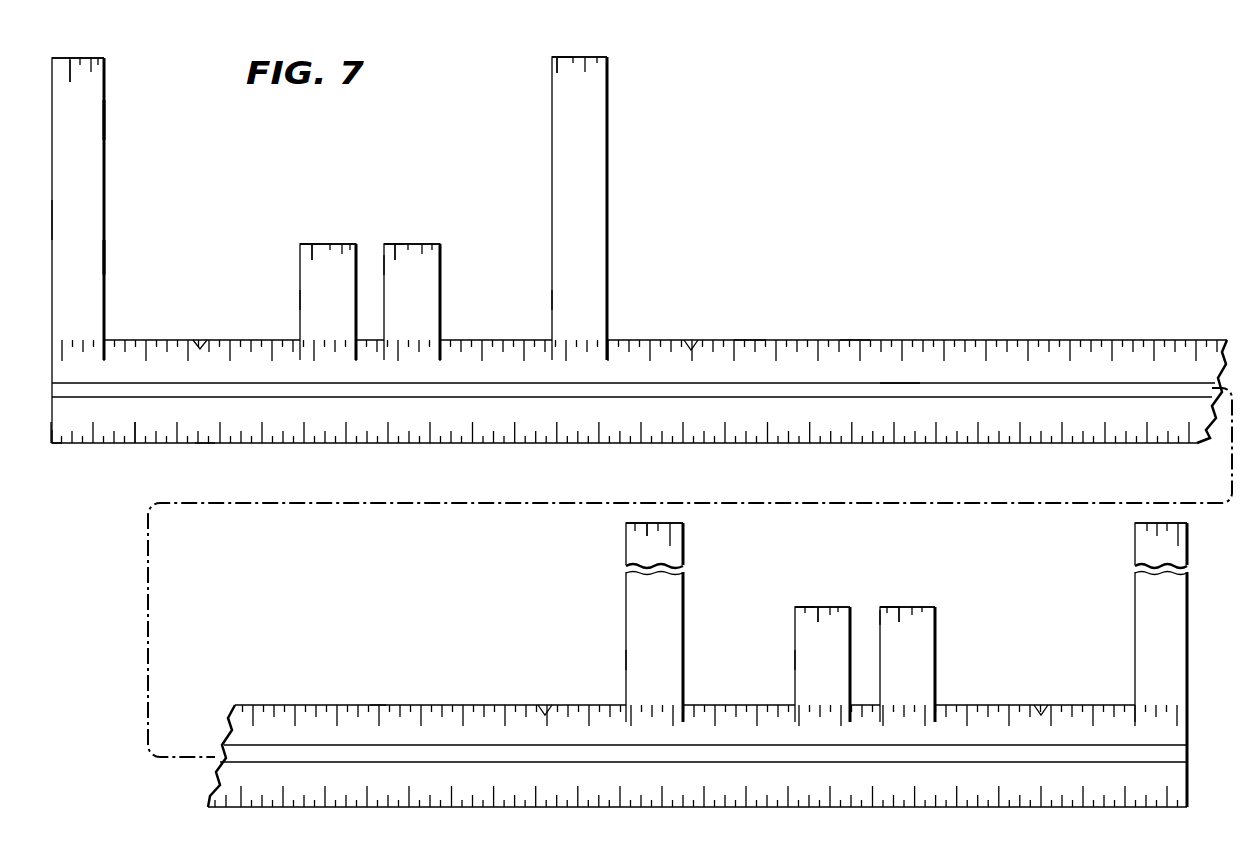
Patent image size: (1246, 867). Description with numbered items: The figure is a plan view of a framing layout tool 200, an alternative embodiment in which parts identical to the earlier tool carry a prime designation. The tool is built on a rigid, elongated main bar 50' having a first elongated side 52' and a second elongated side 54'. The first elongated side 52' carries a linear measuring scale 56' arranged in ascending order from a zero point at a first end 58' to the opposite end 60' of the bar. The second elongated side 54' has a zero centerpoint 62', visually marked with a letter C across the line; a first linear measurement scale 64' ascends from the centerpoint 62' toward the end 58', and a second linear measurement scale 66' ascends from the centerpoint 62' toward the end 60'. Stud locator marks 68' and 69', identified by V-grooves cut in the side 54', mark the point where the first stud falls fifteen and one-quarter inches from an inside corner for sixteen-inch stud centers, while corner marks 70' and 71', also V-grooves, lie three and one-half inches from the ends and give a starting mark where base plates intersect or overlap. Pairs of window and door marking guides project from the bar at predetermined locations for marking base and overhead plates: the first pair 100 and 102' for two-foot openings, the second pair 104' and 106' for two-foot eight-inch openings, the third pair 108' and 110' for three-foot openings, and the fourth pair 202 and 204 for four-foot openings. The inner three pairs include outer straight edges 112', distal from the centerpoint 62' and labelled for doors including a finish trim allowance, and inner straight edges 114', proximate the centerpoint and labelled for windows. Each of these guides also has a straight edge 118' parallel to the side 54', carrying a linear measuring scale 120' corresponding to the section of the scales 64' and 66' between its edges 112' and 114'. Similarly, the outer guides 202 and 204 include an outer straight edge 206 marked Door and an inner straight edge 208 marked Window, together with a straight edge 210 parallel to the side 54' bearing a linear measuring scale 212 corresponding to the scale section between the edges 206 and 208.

The framing layout tool 200 is at (1032, 222).
The opposite end 60' is at (718, 665).
The window and door marking guide 100 is at (620, 137).
The window and door marking guide 102' is at (704, 536).
The window and door marking guide 104' is at (425, 209).
The window and door marking guide 106' is at (827, 578).
The window and door marking guide 108' is at (296, 231).
The window and door marking guide 110' is at (944, 590).
The outer straight edge 112' is at (617, 427).
The inner straight edge 114' is at (620, 436).
The straight edge 118' is at (615, 331).
The linear measuring scale 120' is at (627, 340).
The marking guide 202 is at (97, 60).
The marking guide 204 is at (1185, 525).
The outer straight edge 206 is at (56, 238).
The inner straight edge 208 is at (104, 257).
The straight edge 210 is at (116, 117).
The linear measuring scale 212 is at (88, 69).
The main bar 50' is at (916, 342).
The first elongated side 52' is at (185, 465).
The second elongated side 54' is at (860, 309).
The linear measuring scale 56' is at (115, 459).
The first end 58' is at (67, 463).
The zero centerpoint 62' is at (1132, 326).
The first linear measurement scale 64' is at (763, 309).
The second linear measurement scale 66' is at (361, 680).
The stud locator mark 68' is at (534, 690).
The stud locator mark 69' is at (707, 314).
The corner mark 70' is at (1045, 687).
The corner mark 71' is at (197, 322).